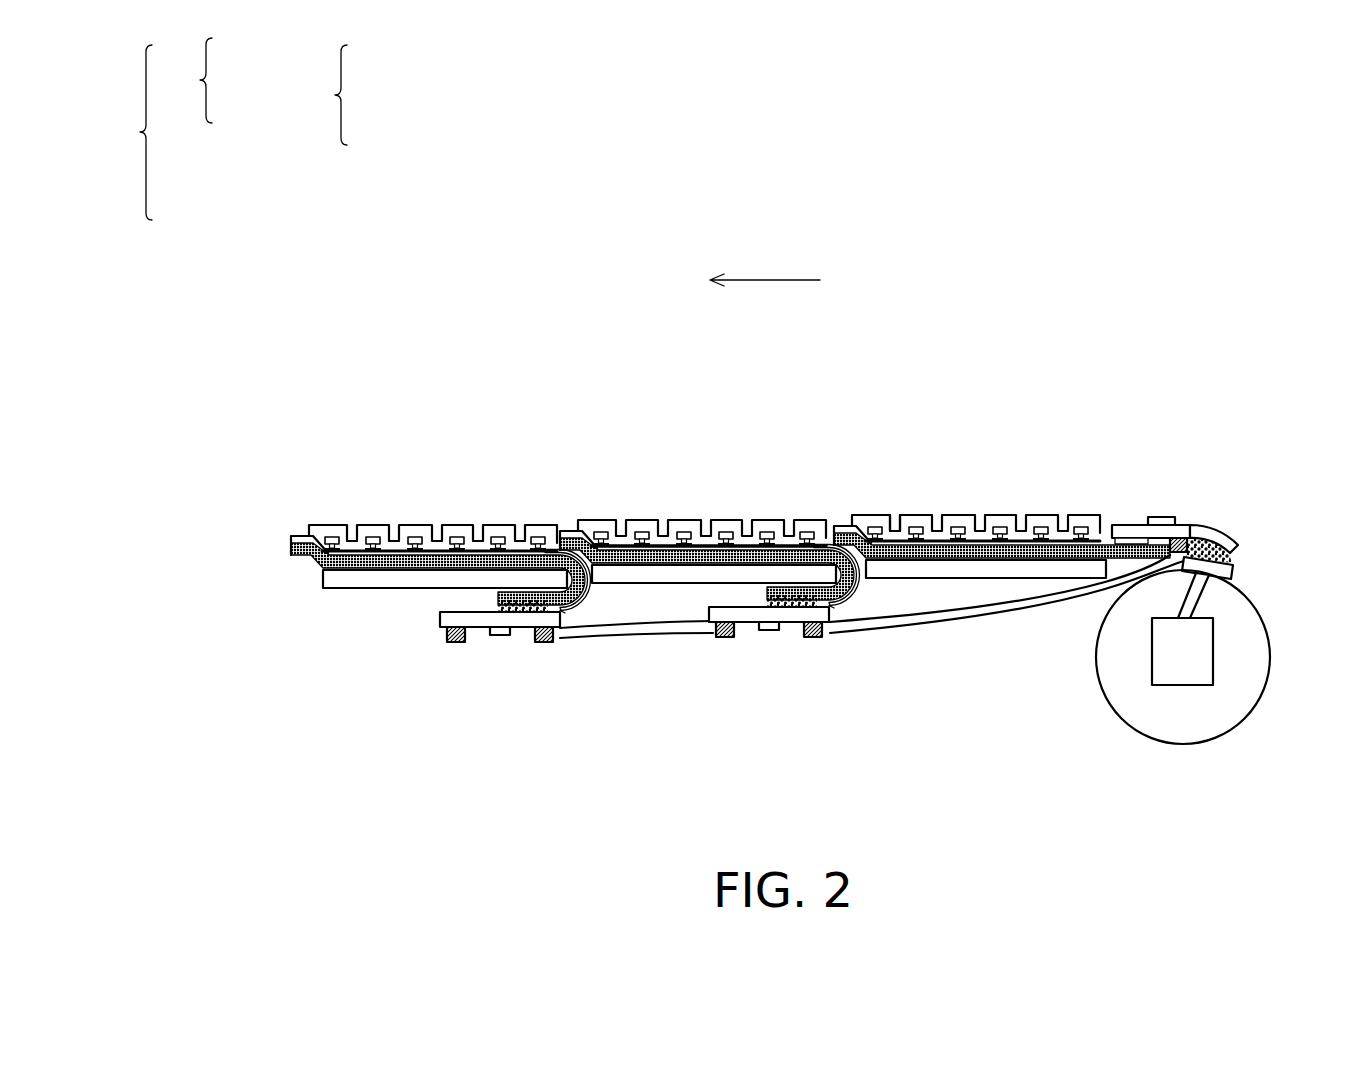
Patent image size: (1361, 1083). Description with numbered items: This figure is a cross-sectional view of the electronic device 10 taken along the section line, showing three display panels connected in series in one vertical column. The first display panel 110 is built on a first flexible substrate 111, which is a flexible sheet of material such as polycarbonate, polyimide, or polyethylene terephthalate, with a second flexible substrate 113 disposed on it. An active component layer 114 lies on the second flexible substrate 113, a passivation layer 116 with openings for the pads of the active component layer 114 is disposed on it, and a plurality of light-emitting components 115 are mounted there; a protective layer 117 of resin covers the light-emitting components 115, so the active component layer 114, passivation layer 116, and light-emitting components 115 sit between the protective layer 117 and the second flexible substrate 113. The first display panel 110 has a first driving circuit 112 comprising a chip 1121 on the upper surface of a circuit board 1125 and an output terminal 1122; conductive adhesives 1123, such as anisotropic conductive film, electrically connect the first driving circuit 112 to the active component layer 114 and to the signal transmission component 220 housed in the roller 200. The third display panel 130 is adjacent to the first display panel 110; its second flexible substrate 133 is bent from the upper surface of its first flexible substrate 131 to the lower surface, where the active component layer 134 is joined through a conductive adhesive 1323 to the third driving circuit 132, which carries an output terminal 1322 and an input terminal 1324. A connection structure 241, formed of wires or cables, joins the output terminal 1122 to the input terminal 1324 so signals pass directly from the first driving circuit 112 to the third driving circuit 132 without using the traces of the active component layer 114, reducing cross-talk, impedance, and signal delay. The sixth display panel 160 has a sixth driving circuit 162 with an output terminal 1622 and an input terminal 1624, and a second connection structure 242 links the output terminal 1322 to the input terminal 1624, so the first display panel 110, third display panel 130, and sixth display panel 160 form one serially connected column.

The electronic device 10 is at (729, 441).
The first display panel 110 is at (1094, 454).
The first flexible substrate 111 is at (928, 572).
The first driving circuit 112 is at (1236, 479).
The chip 1121 is at (1142, 538).
The output terminal 1122 is at (1180, 538).
The conductive adhesives 1123 is at (1163, 517).
The circuit board 1125 is at (1267, 544).
The second flexible substrate 113 is at (973, 550).
The active component layer 114 is at (1012, 557).
The light-emitting components 115 is at (1081, 527).
The passivation layer 116 is at (893, 533).
The protective layer 117 is at (850, 527).
The third display panel 130 is at (716, 583).
The first flexible substrate 131 is at (655, 572).
The third driving circuit 132 is at (757, 620).
The output terminal 1322 is at (727, 635).
The conductive adhesive 1323 is at (777, 630).
The input terminal 1324 is at (818, 635).
The second flexible substrate 133 is at (708, 558).
The active component layer 134 is at (768, 558).
The sixth display panel 160 is at (441, 583).
The sixth driving circuit 162 is at (483, 627).
The output terminal 1622 is at (453, 642).
The input terminal 1624 is at (542, 642).
The roller 200 is at (1228, 657).
The signal transmission component 220 is at (1200, 660).
The connection structure 241 is at (978, 625).
The connection structure 242 is at (598, 633).